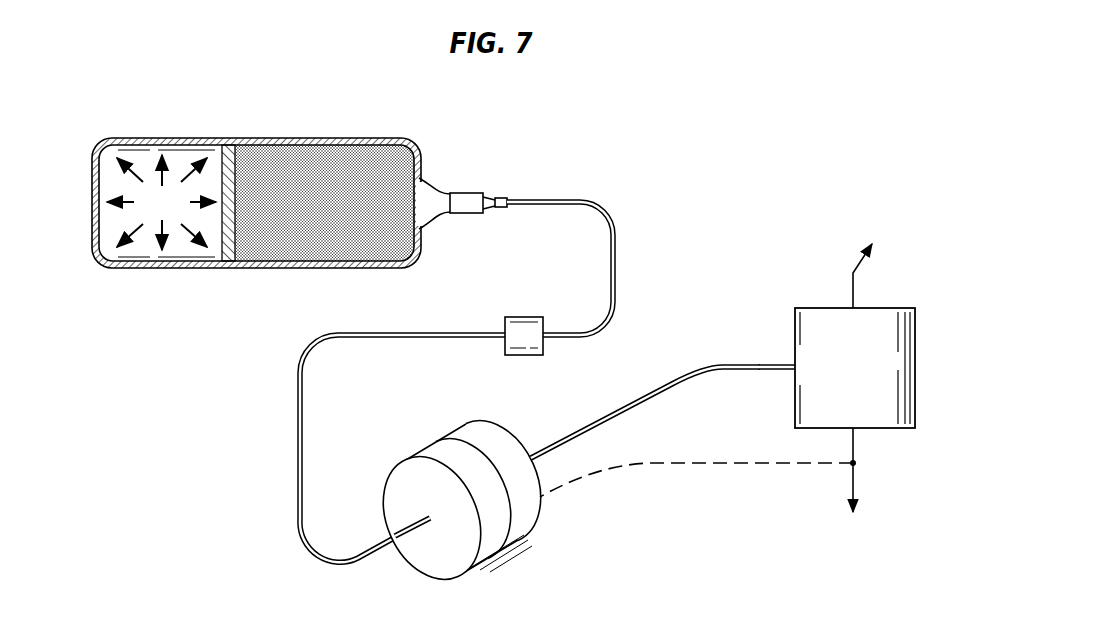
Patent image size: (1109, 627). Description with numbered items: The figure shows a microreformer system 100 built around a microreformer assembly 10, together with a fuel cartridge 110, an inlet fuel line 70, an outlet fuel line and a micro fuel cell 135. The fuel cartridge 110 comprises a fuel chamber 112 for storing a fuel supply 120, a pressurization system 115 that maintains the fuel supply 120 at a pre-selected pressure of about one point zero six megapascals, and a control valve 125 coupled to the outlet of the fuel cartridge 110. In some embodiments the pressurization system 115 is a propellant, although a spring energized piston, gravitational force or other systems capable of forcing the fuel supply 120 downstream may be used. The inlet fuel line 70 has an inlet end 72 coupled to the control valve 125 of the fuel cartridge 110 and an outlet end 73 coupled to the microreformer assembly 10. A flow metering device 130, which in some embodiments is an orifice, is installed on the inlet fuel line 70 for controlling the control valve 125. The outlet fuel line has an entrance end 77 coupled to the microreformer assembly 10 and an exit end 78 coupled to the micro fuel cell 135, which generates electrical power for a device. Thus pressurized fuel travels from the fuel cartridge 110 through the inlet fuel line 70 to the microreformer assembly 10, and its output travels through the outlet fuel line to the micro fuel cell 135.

The microreformer system 100 is at (678, 183).
The fuel cartridge 110 is at (213, 124).
The fuel chamber 112 is at (348, 158).
The pressurization system 115 is at (161, 203).
The fuel supply 120 is at (324, 203).
The control valve 125 is at (467, 193).
The inlet end 72 is at (505, 198).
The inlet fuel line 70 is at (297, 443).
The flow metering device 130 is at (520, 317).
The microreformer assembly 10 is at (428, 446).
The outlet end 73 is at (398, 529).
The entrance end 77 is at (532, 456).
The exit end 78 is at (791, 364).
The micro fuel cell 135 is at (731, 382).